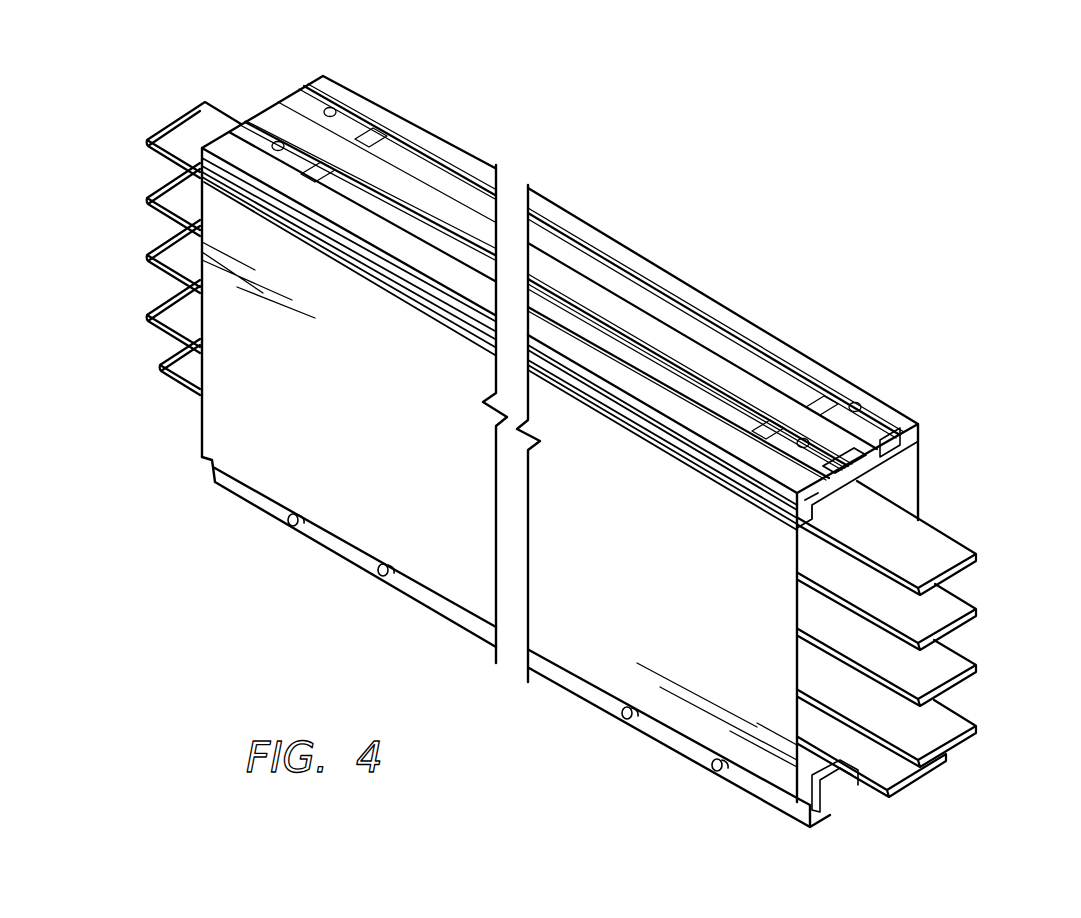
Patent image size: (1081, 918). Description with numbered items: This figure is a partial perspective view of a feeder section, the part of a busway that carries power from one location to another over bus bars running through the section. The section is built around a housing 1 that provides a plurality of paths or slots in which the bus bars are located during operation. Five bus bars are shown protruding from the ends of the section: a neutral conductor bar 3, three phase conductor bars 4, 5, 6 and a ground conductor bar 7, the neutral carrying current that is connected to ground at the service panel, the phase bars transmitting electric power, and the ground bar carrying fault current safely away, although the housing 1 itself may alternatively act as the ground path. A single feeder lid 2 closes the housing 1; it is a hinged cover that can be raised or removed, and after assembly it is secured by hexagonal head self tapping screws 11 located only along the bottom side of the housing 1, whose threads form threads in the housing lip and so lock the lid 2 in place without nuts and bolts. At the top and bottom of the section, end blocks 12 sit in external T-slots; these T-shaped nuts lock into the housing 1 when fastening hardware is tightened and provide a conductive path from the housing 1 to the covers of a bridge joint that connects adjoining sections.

The housing 1 is at (653, 266).
The feeder lid 2 is at (613, 698).
The neutral conductor bar 3 is at (977, 553).
The phase conductor bar 4 is at (977, 610).
The phase conductor bar 5 is at (977, 666).
The phase conductor bar 6 is at (977, 727).
The ground conductor bar 7 is at (925, 778).
The self tapping screw 11 is at (710, 763).
The end block 12 is at (885, 437).